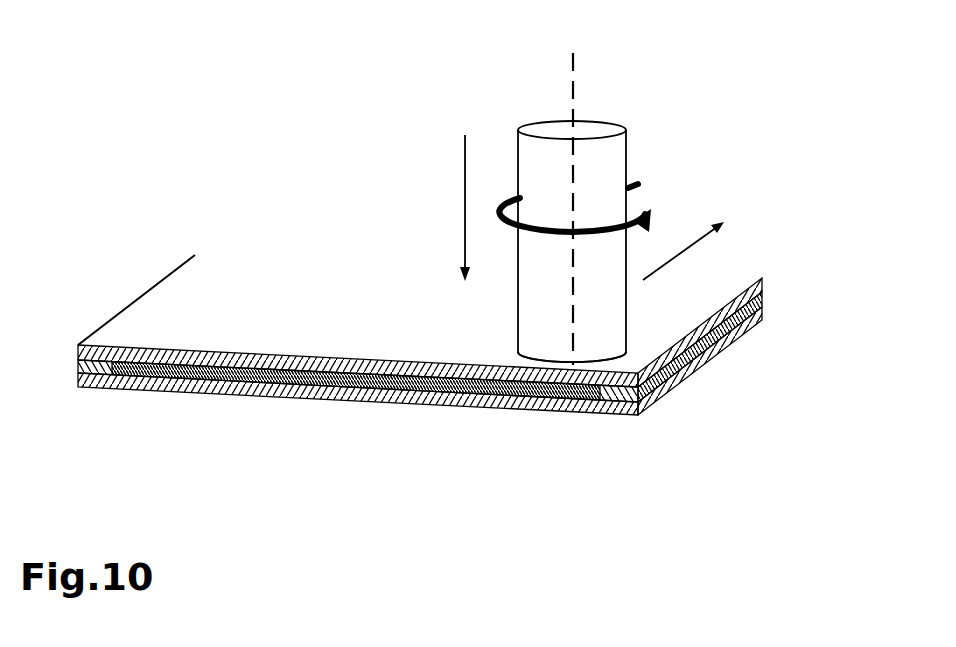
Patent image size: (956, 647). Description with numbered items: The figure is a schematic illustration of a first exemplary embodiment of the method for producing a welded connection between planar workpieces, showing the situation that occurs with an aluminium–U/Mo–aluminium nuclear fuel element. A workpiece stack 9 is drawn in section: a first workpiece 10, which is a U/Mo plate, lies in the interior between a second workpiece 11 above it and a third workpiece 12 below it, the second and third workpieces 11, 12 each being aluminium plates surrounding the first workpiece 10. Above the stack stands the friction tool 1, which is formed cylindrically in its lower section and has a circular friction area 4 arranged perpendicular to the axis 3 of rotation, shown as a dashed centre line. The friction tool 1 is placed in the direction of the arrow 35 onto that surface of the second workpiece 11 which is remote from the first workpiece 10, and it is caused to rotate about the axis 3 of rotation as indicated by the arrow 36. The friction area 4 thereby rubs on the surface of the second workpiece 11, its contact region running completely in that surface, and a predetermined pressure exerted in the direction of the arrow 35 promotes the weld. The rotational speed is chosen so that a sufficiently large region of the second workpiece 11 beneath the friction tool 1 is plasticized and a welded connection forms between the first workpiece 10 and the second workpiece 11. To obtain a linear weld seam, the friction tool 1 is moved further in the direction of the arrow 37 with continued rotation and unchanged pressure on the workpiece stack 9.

The friction tool 1 is at (598, 273).
The axis of rotation 3 is at (592, 75).
The friction area 4 is at (575, 362).
The workpiece stack 9 is at (462, 394).
The first workpiece 10 is at (362, 380).
The second workpiece 11 is at (298, 362).
The third workpiece 12 is at (462, 398).
The arrow 35 is at (460, 163).
The arrow 36 is at (652, 210).
The arrow 37 is at (705, 243).